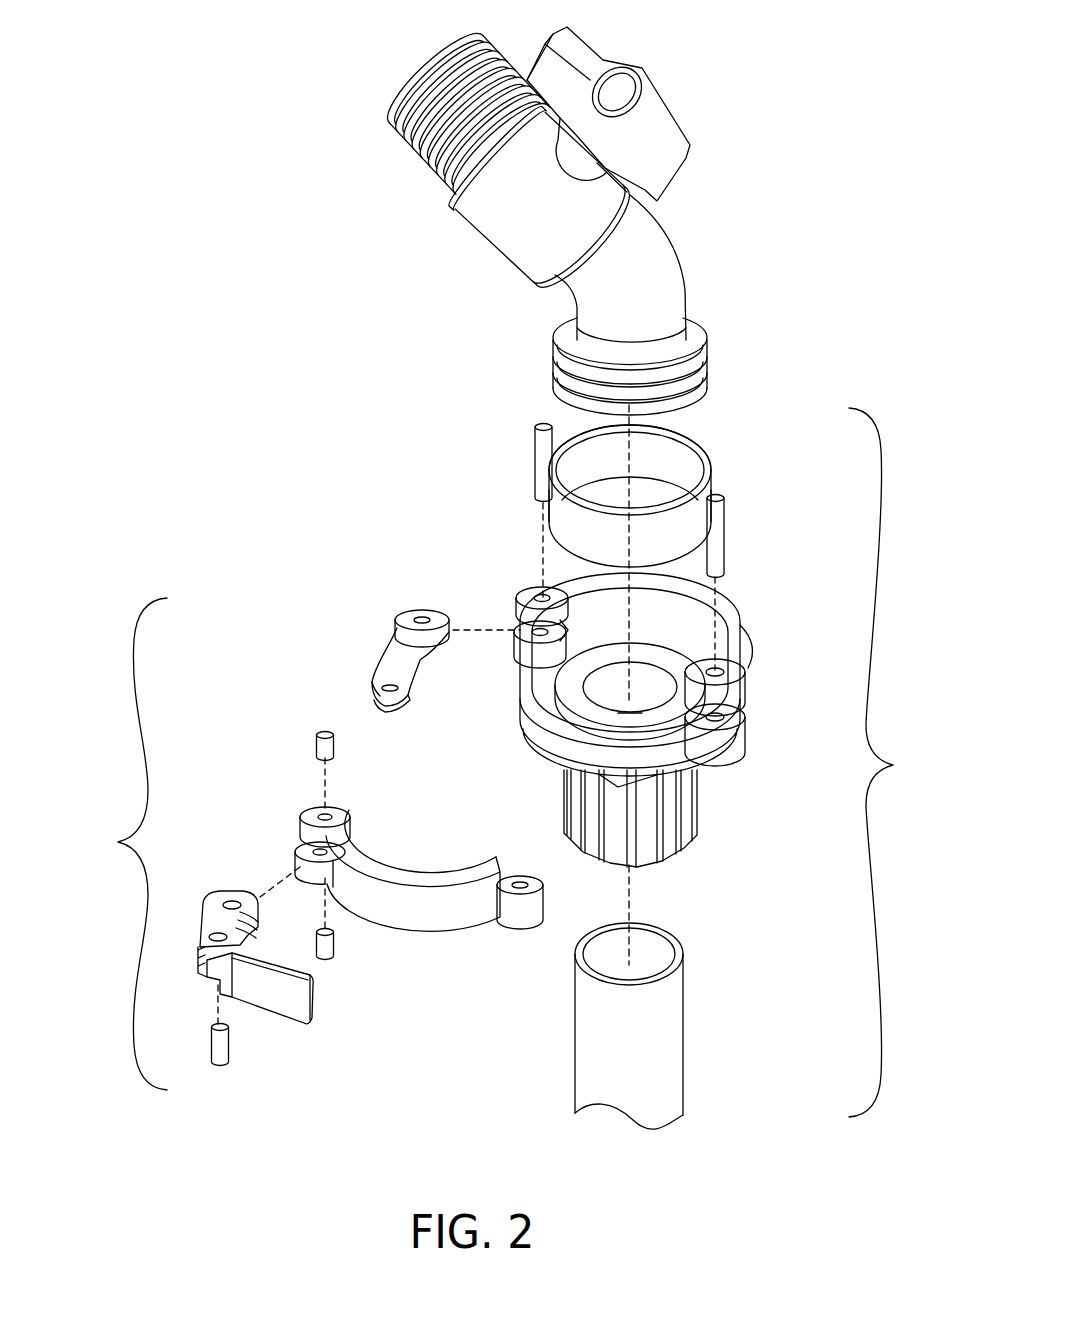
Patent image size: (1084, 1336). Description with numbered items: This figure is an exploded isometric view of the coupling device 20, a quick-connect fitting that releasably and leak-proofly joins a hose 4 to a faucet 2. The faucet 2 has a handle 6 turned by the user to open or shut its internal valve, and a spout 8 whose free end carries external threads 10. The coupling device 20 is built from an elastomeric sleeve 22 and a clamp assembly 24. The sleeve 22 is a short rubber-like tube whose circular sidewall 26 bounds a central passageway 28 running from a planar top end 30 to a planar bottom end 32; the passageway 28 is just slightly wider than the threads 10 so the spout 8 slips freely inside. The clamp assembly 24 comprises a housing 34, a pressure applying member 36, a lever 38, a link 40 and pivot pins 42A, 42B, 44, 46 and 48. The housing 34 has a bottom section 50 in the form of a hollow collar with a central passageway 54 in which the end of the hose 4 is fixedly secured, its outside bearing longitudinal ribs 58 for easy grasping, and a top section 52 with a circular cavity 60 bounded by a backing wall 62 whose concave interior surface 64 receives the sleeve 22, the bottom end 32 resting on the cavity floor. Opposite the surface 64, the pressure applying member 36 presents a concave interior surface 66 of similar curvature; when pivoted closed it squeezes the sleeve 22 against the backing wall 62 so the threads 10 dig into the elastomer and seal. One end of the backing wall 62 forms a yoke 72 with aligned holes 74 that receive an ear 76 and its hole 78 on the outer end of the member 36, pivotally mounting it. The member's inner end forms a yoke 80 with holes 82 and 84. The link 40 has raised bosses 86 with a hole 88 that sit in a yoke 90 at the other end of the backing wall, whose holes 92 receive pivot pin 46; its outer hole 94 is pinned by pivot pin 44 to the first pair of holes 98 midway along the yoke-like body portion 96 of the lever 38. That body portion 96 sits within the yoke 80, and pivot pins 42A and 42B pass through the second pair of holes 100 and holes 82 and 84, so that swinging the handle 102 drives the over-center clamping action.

The faucet 2 is at (505, 234).
The hose 4 is at (687, 1050).
The handle 6 is at (658, 127).
The spout 8 is at (668, 277).
The external threads 10 is at (707, 365).
The coupling device 20 is at (893, 765).
The elastomeric sleeve 22 is at (616, 456).
The clamp assembly 24 is at (118, 842).
The circular sidewall 26 is at (563, 510).
The central passageway 28 is at (677, 460).
The planar top end 30 is at (593, 480).
The planar bottom end 32 is at (583, 430).
The housing 34 is at (640, 686).
The pressure applying member 36 is at (413, 889).
The lever 38 is at (260, 968).
The link 40 is at (367, 638).
The pivot pin 42A is at (318, 742).
The pivot pin 42B is at (335, 946).
The pivot pin 44 is at (222, 1060).
The pivot pin 46 is at (535, 458).
The pivot pin 48 is at (720, 497).
The bottom section 50 is at (675, 833).
The top section 52 is at (585, 717).
The central passageway 54 is at (612, 692).
The ribs 58 is at (694, 828).
The circular cavity 60 is at (567, 690).
The backing wall 62 is at (730, 640).
The concave interior surface 64 is at (688, 628).
The concave interior surface 66 is at (390, 863).
The yoke 72 is at (735, 716).
The holes 74 is at (748, 672).
The ear 76 is at (545, 905).
The hole 78 is at (520, 890).
The yoke 80 is at (307, 832).
The hole 82 is at (313, 805).
The hole 84 is at (320, 855).
The raised bosses 86 is at (410, 618).
The hole 88 is at (420, 613).
The yoke 90 is at (524, 652).
The holes 92 is at (512, 622).
The hole 94 is at (391, 693).
The yoke-like body portion 96 is at (258, 937).
The first pair of holes 98 is at (220, 933).
The second pair of holes 100 is at (234, 901).
The handle 102 is at (279, 1000).